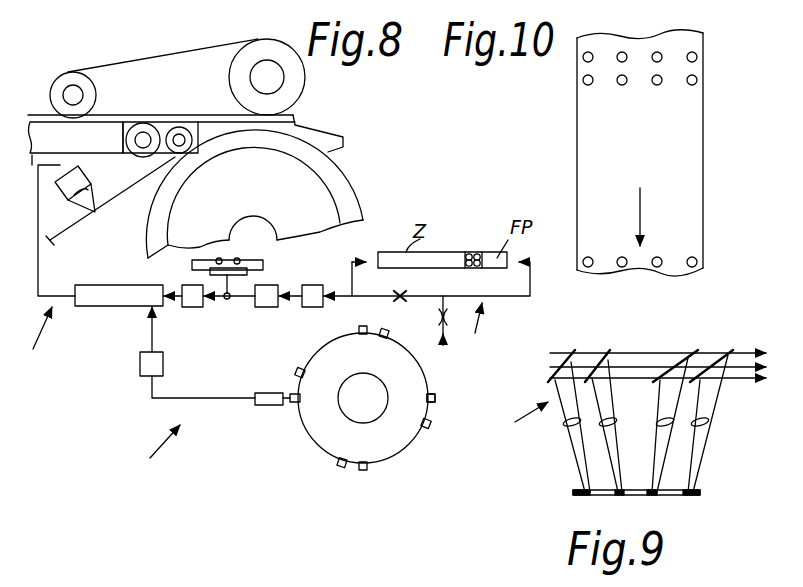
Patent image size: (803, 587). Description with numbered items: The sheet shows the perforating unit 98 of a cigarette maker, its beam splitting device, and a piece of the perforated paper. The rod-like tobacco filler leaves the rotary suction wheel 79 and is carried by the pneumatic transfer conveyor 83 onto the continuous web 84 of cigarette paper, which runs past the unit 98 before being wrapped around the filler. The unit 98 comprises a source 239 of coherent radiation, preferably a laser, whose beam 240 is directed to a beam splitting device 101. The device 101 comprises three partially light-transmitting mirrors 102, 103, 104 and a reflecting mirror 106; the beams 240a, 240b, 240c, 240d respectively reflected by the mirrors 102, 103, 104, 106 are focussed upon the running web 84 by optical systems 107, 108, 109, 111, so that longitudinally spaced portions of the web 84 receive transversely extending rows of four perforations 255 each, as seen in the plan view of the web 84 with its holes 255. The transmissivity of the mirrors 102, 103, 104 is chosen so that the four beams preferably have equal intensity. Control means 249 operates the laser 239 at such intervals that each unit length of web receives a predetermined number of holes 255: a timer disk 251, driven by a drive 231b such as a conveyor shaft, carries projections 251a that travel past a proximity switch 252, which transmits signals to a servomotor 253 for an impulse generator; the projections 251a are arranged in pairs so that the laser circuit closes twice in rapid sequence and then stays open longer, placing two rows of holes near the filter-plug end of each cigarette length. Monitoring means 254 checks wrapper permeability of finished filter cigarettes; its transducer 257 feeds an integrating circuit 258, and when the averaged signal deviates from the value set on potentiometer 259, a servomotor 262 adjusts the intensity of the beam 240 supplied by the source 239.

In FIG. 8, the pneumatic transfer conveyor 83 is at (192, 75).
In FIG. 8, the rotary suction wheel 79 is at (343, 192).
In FIG. 8, the beam splitting device 101 is at (84, 176).
In FIG. 9, the beam splitting device 101 is at (519, 423).
In FIG. 8, the continuous web of cigarette paper 84 is at (114, 200).
In FIG. 10, the continuous web of cigarette paper 84 is at (587, 138).
In FIG. 9, the continuous web of cigarette paper 84 is at (670, 496).
In FIG. 8, the beam 240 is at (40, 271).
In FIG. 9, the beam 240 is at (766, 351).
In FIG. 8, the perforating unit 98 is at (38, 343).
In FIG. 8, the source of coherent radiation 239 is at (86, 306).
In FIG. 8, the servomotor 262 is at (191, 308).
In FIG. 8, the integrating circuit 258 is at (263, 308).
In FIG. 8, the electropneumatic transducer 257 is at (309, 308).
In FIG. 8, the potentiometer 259 is at (265, 265).
In FIG. 8, the servomotor 253 is at (140, 368).
In FIG. 8, the proximity switch 252 is at (267, 406).
In FIG. 8, the control means 249 is at (155, 458).
In FIG. 8, the timer disk 251 is at (323, 441).
In FIG. 8, the hub / shaft of pulse wheel 231b is at (372, 412).
In FIG. 8, the projections 251a is at (437, 396).
In FIG. 8, the monitoring means 254 is at (484, 331).
In FIG. 8, the perforations 255 is at (487, 234).
In FIG. 10, the perforations 255 is at (584, 80).
In FIG. 9, the perforations 255 is at (583, 496).
In FIG. 9, the reflecting mirror 106 is at (569, 351).
In FIG. 9, the partially light-transmitting mirror 104 is at (606, 351).
In FIG. 9, the partially light-transmitting mirror 103 is at (690, 351).
In FIG. 9, the partially light-transmitting mirror 102 is at (733, 352).
In FIG. 9, the beam 240a is at (721, 396).
In FIG. 9, the beam 240b is at (688, 455).
In FIG. 9, the beam 240c is at (603, 447).
In FIG. 9, the beam 240d is at (567, 440).
In FIG. 9, the optical system 107 is at (740, 431).
In FIG. 9, the optical system 108 is at (655, 423).
In FIG. 9, the optical system 109 is at (615, 421).
In FIG. 9, the optical system 111 is at (563, 424).